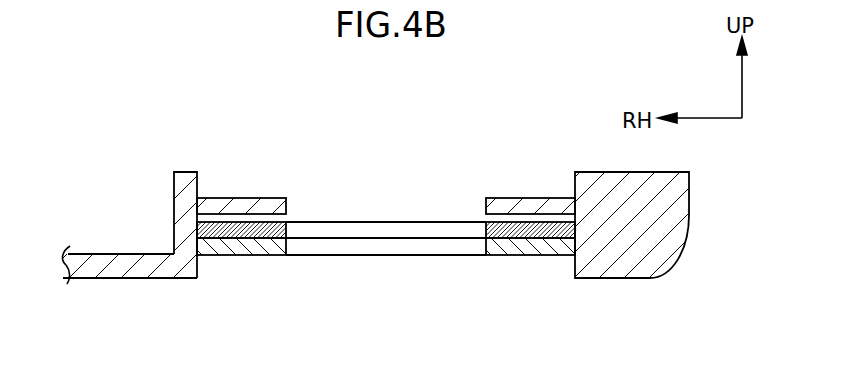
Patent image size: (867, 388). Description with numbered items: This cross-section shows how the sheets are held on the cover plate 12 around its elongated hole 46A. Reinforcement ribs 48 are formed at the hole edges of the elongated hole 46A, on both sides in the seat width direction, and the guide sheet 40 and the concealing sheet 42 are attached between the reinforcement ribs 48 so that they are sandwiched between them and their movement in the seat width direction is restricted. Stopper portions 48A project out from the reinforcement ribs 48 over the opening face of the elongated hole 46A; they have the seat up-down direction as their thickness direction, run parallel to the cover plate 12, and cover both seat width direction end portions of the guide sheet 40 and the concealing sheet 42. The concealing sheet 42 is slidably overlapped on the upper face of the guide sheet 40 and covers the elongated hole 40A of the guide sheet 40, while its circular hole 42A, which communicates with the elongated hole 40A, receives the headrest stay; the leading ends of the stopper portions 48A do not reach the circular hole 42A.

The cover plate 12 is at (118, 278).
The guide sheet 40 is at (222, 256).
The elongated hole 40A is at (484, 246).
The concealing sheet 42 is at (262, 240).
The circular hole 42A is at (294, 224).
The elongated hole 46A is at (574, 278).
The reinforcement rib 48 is at (174, 214).
The stopper portion 48A is at (250, 198).